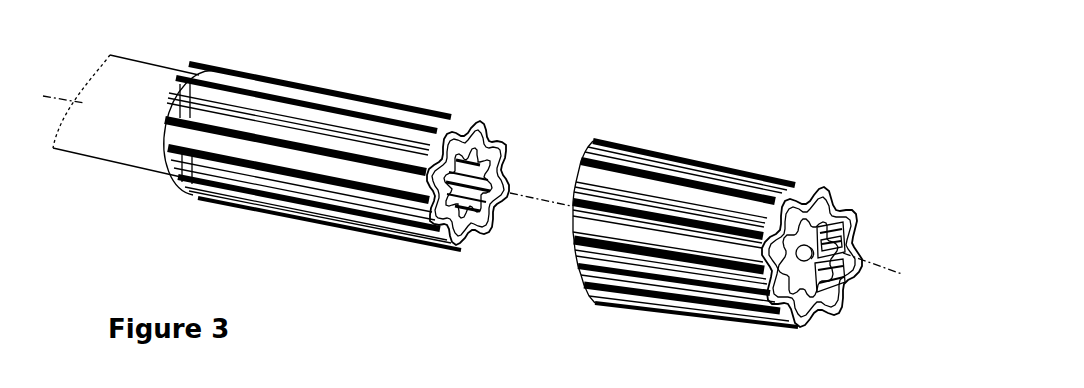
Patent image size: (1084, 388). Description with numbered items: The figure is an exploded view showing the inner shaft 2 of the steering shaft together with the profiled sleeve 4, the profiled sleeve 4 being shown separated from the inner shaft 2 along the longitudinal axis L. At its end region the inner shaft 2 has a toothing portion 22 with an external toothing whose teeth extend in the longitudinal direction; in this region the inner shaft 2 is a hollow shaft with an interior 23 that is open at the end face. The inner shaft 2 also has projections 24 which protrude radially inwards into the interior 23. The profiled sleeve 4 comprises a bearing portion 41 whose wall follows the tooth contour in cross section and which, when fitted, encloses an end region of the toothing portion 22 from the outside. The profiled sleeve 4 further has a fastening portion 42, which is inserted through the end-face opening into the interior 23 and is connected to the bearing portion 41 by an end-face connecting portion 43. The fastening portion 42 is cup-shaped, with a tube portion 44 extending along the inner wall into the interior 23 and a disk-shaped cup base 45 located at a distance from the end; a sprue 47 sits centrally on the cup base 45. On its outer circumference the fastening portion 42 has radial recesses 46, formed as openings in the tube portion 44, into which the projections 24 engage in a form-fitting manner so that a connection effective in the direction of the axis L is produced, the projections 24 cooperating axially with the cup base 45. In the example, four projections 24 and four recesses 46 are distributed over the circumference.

The inner shaft 2 is at (147, 85).
The toothing portion 22 is at (300, 93).
The interior 23 is at (468, 177).
The projections 24 is at (493, 163).
The profiled sleeve 4 is at (766, 233).
The bearing portion 41 is at (658, 183).
The fastening portion 42 is at (825, 237).
The connecting portion 43 is at (838, 232).
The tube portion 44 is at (833, 267).
The cup base 45 is at (803, 275).
The radial recesses 46 is at (865, 247).
The sprue 47 is at (806, 247).
The longitudinal axis L is at (897, 273).